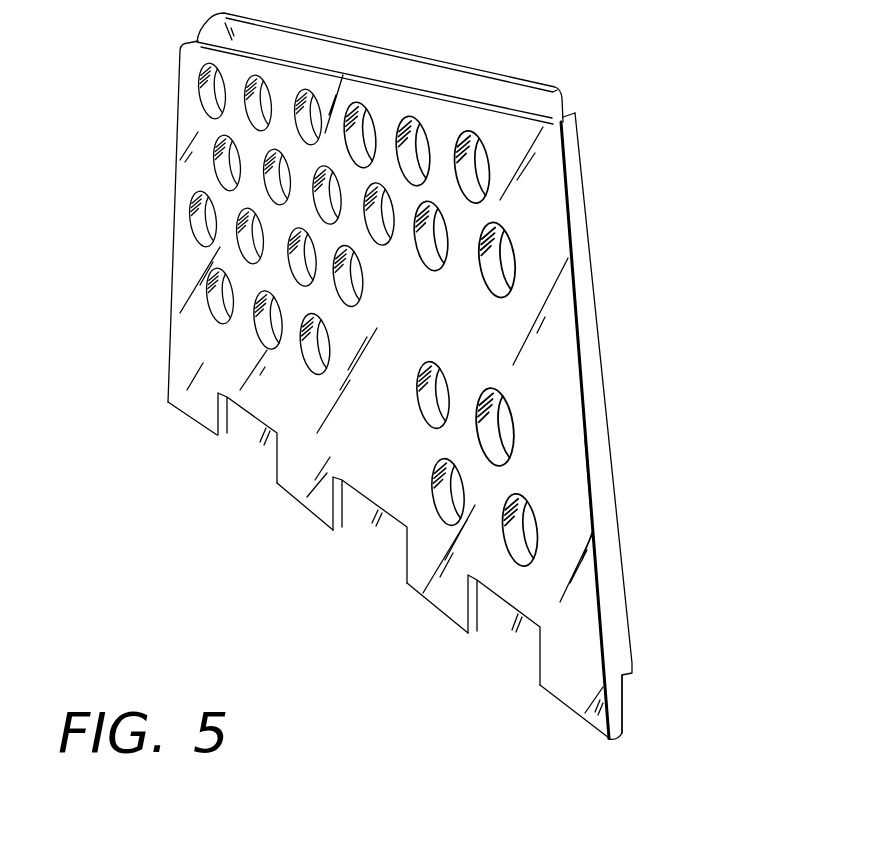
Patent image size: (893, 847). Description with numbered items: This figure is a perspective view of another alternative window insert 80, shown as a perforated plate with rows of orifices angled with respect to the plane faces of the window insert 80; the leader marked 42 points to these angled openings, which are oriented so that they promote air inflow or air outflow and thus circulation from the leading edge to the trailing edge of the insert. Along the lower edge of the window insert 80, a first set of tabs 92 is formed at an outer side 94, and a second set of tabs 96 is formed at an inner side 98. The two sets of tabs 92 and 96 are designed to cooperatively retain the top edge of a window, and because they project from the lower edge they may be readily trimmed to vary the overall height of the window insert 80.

The window insert 80 is at (537, 213).
The apertures 42 is at (205, 165).
The first set of tabs 92 is at (200, 410).
The second set of tabs 96 is at (250, 438).
The inner side 98 is at (622, 537).
The outer side 94 is at (587, 624).